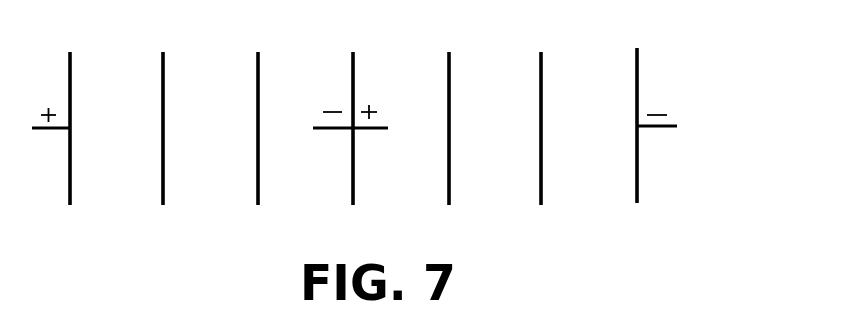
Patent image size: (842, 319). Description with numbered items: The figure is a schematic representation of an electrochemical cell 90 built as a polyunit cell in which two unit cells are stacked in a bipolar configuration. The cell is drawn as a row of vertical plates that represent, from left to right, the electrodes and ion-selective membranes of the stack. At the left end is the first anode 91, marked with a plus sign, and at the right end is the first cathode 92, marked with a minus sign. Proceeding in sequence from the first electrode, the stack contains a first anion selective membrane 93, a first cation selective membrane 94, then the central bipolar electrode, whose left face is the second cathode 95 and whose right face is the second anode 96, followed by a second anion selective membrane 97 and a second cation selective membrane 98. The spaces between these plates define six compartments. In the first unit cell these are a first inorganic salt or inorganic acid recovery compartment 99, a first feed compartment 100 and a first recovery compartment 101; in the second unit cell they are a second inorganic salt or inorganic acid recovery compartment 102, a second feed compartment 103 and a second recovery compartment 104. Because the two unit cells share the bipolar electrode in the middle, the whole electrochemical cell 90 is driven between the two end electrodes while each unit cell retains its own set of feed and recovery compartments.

The electrochemical cell 90 is at (701, 77).
The first anode 91 is at (54, 115).
The first cathode 92 is at (650, 113).
The first anion selective membrane 93 is at (161, 132).
The first cation selective membrane 94 is at (257, 132).
The second cathode 95 is at (333, 115).
The second anode 96 is at (370, 76).
The second anion selective membrane 97 is at (447, 132).
The second cation selective membrane 98 is at (538, 132).
The first inorganic salt or inorganic acid recovery compartment 99 is at (114, 194).
The first feed compartment 100 is at (212, 194).
The first recovery compartment 101 is at (306, 194).
The second inorganic salt or inorganic acid recovery compartment 102 is at (402, 194).
The second feed compartment 103 is at (497, 194).
The second recovery compartment 104 is at (590, 194).